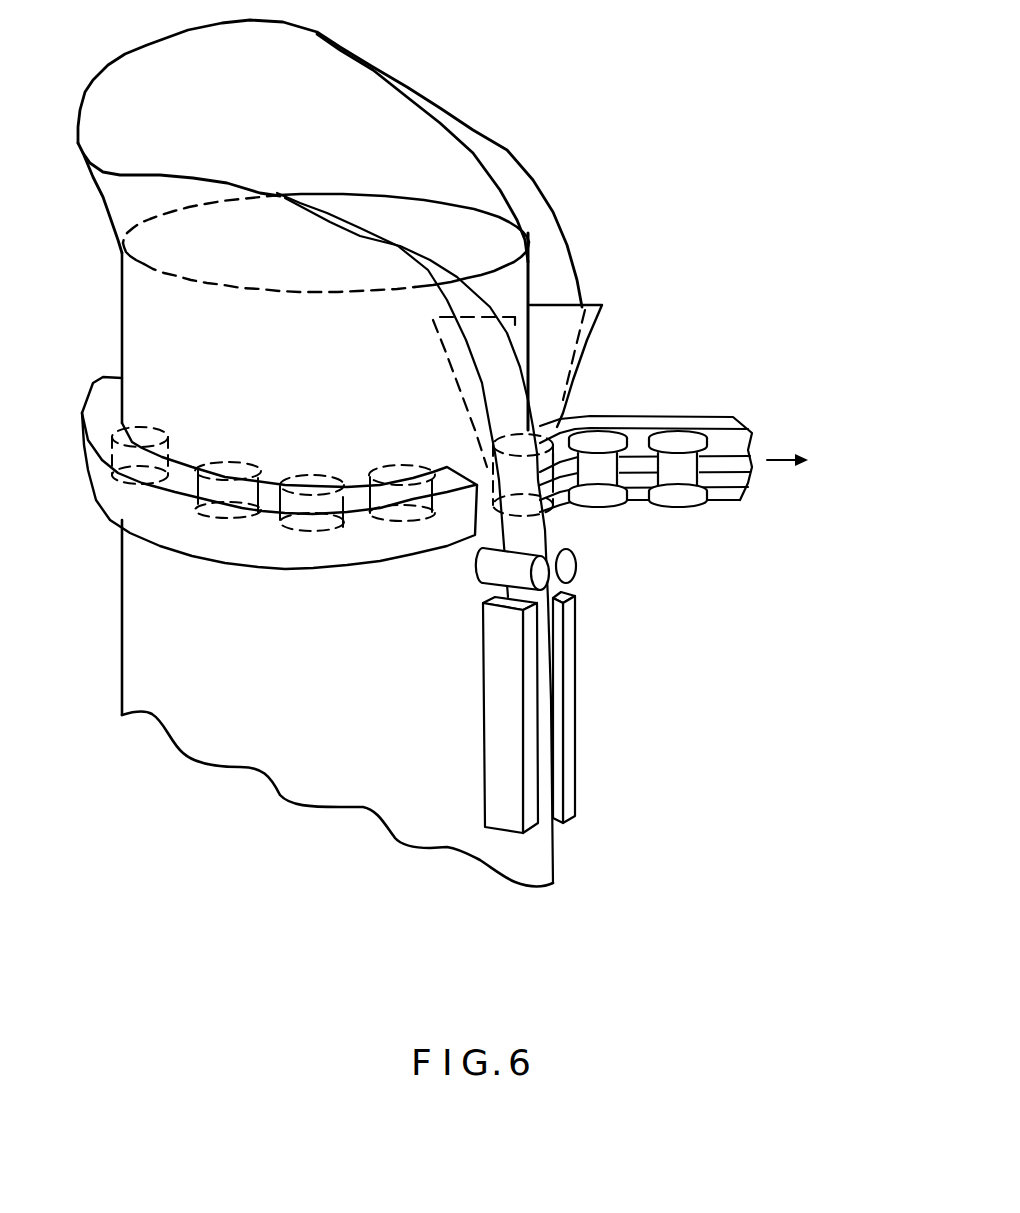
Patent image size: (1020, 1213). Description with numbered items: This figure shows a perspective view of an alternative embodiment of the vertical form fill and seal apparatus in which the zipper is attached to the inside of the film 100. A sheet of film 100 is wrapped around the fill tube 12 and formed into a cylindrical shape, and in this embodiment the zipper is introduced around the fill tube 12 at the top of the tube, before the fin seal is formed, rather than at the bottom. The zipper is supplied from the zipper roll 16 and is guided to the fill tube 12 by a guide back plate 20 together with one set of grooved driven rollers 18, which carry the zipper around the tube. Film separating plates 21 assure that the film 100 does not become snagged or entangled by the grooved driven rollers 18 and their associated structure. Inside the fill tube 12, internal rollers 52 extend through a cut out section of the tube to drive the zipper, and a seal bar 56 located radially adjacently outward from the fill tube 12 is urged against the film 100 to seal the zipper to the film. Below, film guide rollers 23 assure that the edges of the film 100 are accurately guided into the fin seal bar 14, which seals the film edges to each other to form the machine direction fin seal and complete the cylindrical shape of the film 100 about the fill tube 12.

The film 100 is at (517, 187).
The fill tube 12 is at (138, 343).
The film separating plates 21 is at (520, 327).
The seal bar 56 is at (265, 548).
The internal rollers 52 is at (165, 440).
The guide back plate 20 is at (688, 418).
The grooved driven rollers 18 is at (680, 480).
The film guide rollers 23 is at (570, 563).
The fin seal bar 14 is at (573, 708).
The zipper roll 16 is at (851, 460).